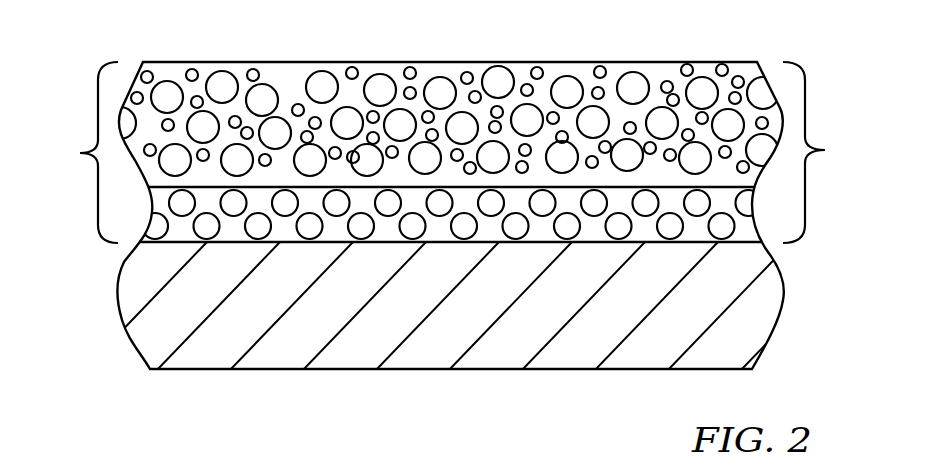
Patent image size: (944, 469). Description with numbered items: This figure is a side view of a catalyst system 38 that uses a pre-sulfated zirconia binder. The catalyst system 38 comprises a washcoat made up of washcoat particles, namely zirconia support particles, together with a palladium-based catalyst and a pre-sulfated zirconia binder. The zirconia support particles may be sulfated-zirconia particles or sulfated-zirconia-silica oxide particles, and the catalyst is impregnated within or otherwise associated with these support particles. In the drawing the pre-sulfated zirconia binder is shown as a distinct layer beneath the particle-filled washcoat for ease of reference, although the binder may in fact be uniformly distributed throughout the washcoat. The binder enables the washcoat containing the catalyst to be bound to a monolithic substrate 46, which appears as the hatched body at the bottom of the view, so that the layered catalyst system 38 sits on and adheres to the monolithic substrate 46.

The catalyst system 38 is at (820, 152).
The monolithic substrate 46 is at (190, 308).